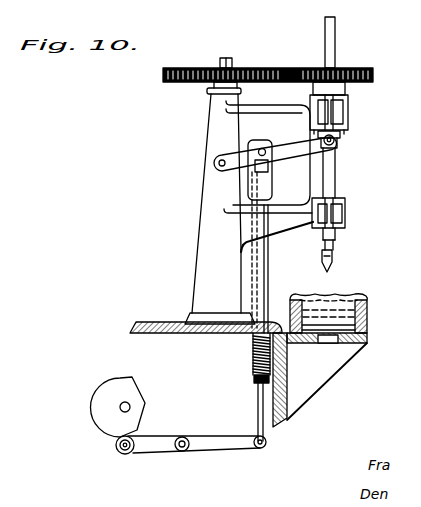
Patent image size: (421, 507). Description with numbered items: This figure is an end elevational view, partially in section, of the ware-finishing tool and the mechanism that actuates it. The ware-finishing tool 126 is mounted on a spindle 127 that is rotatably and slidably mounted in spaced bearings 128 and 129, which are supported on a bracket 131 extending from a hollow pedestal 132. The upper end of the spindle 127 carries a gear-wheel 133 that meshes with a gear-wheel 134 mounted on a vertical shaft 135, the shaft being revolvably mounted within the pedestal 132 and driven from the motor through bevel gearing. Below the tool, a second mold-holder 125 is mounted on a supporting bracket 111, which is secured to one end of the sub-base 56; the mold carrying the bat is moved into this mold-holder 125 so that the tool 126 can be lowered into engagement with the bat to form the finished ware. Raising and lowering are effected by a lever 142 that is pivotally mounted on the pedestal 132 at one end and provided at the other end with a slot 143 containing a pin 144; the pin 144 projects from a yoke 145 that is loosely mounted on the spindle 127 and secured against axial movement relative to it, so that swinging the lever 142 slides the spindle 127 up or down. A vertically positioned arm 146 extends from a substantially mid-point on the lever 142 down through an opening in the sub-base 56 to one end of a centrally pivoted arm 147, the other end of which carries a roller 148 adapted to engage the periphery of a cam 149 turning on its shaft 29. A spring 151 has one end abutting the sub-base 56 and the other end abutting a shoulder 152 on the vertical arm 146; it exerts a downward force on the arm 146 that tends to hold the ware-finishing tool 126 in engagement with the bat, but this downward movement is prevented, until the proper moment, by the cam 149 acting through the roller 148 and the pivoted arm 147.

The spindle 127 is at (337, 19).
The gear-wheel 133 is at (372, 72).
The gear-wheel 134 is at (265, 70).
The vertical shaft 135 is at (226, 58).
The bearing 128 is at (348, 104).
The hollow pedestal 132 is at (205, 209).
The lever 142 is at (286, 139).
The vertical arm 146 is at (269, 275).
The slot 143 is at (318, 147).
The yoke 145 is at (340, 142).
The pin 144 is at (340, 148).
The bearing 129 is at (346, 216).
The ware-finishing tool 126 is at (331, 264).
The bracket 131 is at (282, 224).
The sub-base 56 is at (154, 323).
The supporting bracket 111 is at (320, 380).
The second mold-holder 125 is at (367, 322).
The spring 151 is at (256, 342).
The shoulder 152 is at (254, 377).
The cam 149 is at (146, 404).
The cam shaft 29 is at (122, 410).
The roller 148 is at (126, 454).
The centrally pivoted arm 147 is at (217, 442).